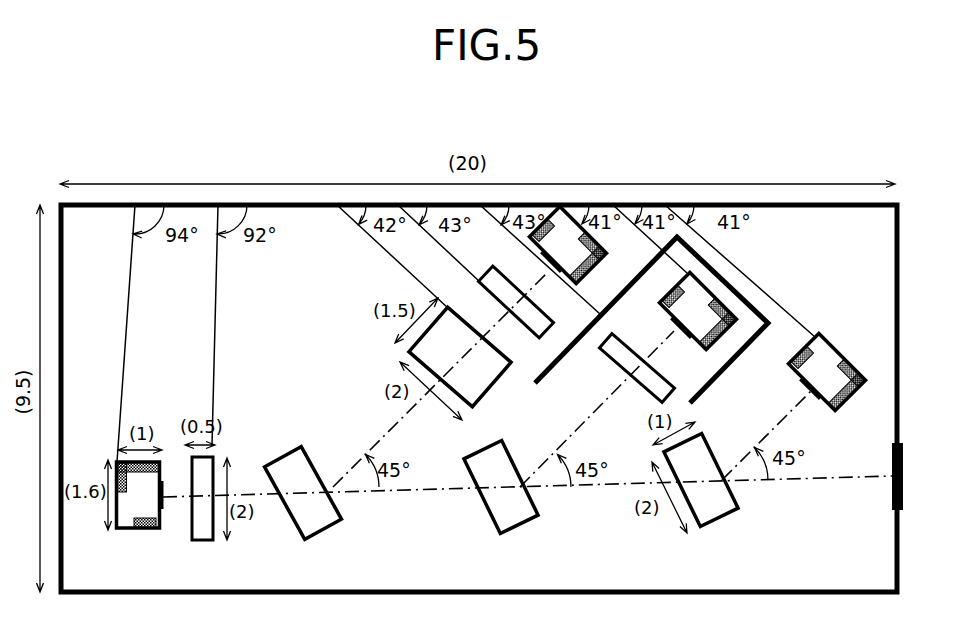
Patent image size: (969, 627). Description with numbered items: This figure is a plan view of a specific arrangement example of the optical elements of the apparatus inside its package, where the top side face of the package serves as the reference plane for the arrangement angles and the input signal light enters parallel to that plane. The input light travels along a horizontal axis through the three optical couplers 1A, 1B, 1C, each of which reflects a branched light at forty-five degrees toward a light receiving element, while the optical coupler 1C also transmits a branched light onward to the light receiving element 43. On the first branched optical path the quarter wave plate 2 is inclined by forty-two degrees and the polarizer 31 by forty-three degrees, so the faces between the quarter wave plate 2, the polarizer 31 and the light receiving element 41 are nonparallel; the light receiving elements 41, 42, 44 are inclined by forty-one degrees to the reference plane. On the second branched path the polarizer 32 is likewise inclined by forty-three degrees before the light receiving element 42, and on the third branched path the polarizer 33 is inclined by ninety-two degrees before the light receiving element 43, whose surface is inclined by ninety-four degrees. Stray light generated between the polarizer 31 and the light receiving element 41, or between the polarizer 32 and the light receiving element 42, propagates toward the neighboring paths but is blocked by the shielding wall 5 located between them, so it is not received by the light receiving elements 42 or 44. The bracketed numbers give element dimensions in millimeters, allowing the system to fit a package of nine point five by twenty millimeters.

The optical coupler 1A is at (723, 517).
The optical coupler 1B is at (524, 522).
The optical coupler 1C is at (320, 530).
The quarter wave plate 2 is at (493, 387).
The polarizer 31 is at (518, 324).
The polarizer 32 is at (636, 368).
The polarizer 33 is at (203, 541).
The light receiving element 41 is at (572, 284).
The light receiving element 42 is at (712, 292).
The light receiving element 43 is at (135, 530).
The light receiving element 44 is at (837, 348).
The shielding wall 5 is at (730, 372).